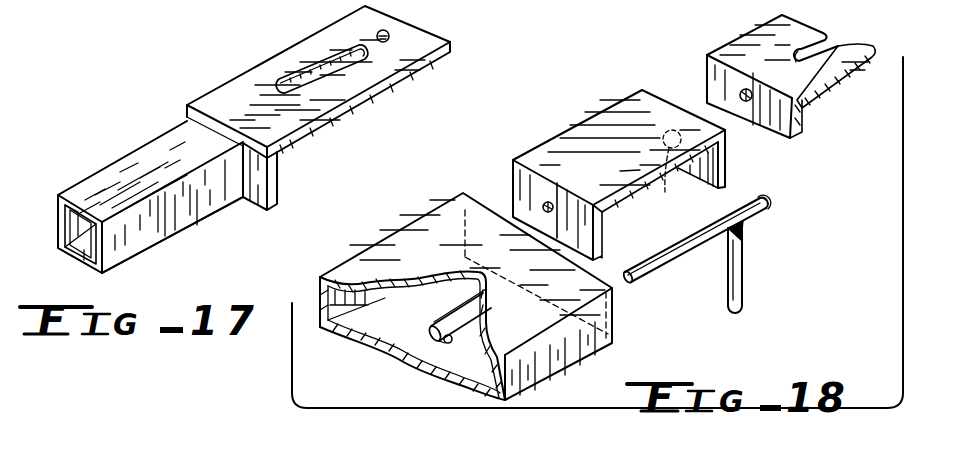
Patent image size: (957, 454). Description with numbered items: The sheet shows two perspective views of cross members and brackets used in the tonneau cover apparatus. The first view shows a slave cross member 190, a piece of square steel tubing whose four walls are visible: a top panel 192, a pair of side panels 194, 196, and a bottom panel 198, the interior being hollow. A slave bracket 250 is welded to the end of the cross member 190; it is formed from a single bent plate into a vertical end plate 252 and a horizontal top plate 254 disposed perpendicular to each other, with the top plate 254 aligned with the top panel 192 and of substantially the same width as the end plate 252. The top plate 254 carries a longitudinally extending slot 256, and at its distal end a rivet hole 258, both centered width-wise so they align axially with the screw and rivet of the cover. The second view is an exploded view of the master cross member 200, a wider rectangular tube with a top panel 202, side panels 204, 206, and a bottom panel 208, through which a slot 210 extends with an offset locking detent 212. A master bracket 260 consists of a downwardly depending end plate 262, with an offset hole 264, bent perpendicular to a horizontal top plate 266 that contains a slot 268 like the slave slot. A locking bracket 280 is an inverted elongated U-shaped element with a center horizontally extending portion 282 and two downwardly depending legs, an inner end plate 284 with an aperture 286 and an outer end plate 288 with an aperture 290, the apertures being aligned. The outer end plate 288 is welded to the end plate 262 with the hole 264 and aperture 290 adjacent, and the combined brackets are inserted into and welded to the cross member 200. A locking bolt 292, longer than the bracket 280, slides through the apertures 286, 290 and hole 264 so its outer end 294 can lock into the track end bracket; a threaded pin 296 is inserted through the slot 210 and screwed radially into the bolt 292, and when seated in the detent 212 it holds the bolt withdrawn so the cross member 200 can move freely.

In FIG. 17, the cross member 190 is at (173, 245).
In FIG. 17, the top panel 192 is at (150, 153).
In FIG. 17, the side panel 194 is at (60, 225).
In FIG. 17, the side panel 196 is at (220, 200).
In FIG. 17, the bottom panel 198 is at (80, 258).
In FIG. 17, the slave bracket 250 is at (208, 89).
In FIG. 17, the vertical end plate 252 is at (262, 190).
In FIG. 17, the horizontal top plate 254 is at (405, 58).
In FIG. 17, the slot 256 is at (325, 62).
In FIG. 17, the rivet hole 258 is at (388, 30).
In FIG. 18, the master cross member 200 is at (415, 222).
In FIG. 18, the top panel 202 is at (392, 247).
In FIG. 18, the side panel 204 is at (318, 303).
In FIG. 18, the side panel 206 is at (557, 362).
In FIG. 18, the bottom panel 208 is at (378, 342).
In FIG. 18, the slot 210 is at (462, 318).
In FIG. 18, the locking detent 212 is at (432, 350).
In FIG. 18, the master bracket 260 is at (724, 37).
In FIG. 18, the vertical end plate 262 is at (778, 136).
In FIG. 18, the hole 264 is at (718, 90).
In FIG. 18, the horizontal top plate 266 is at (834, 72).
In FIG. 18, the slot 268 is at (755, 42).
In FIG. 18, the locking bracket 280 is at (574, 120).
In FIG. 18, the horizontally extending portion 282 is at (618, 108).
In FIG. 18, the inner end plate 284 is at (518, 190).
In FIG. 18, the aperture 286 is at (642, 170).
In FIG. 18, the outer end plate 288 is at (708, 170).
In FIG. 18, the aperture 290 is at (676, 171).
In FIG. 18, the locking bolt 292 is at (670, 258).
In FIG. 18, the outer end 294 is at (768, 206).
In FIG. 18, the pin 296 is at (743, 302).